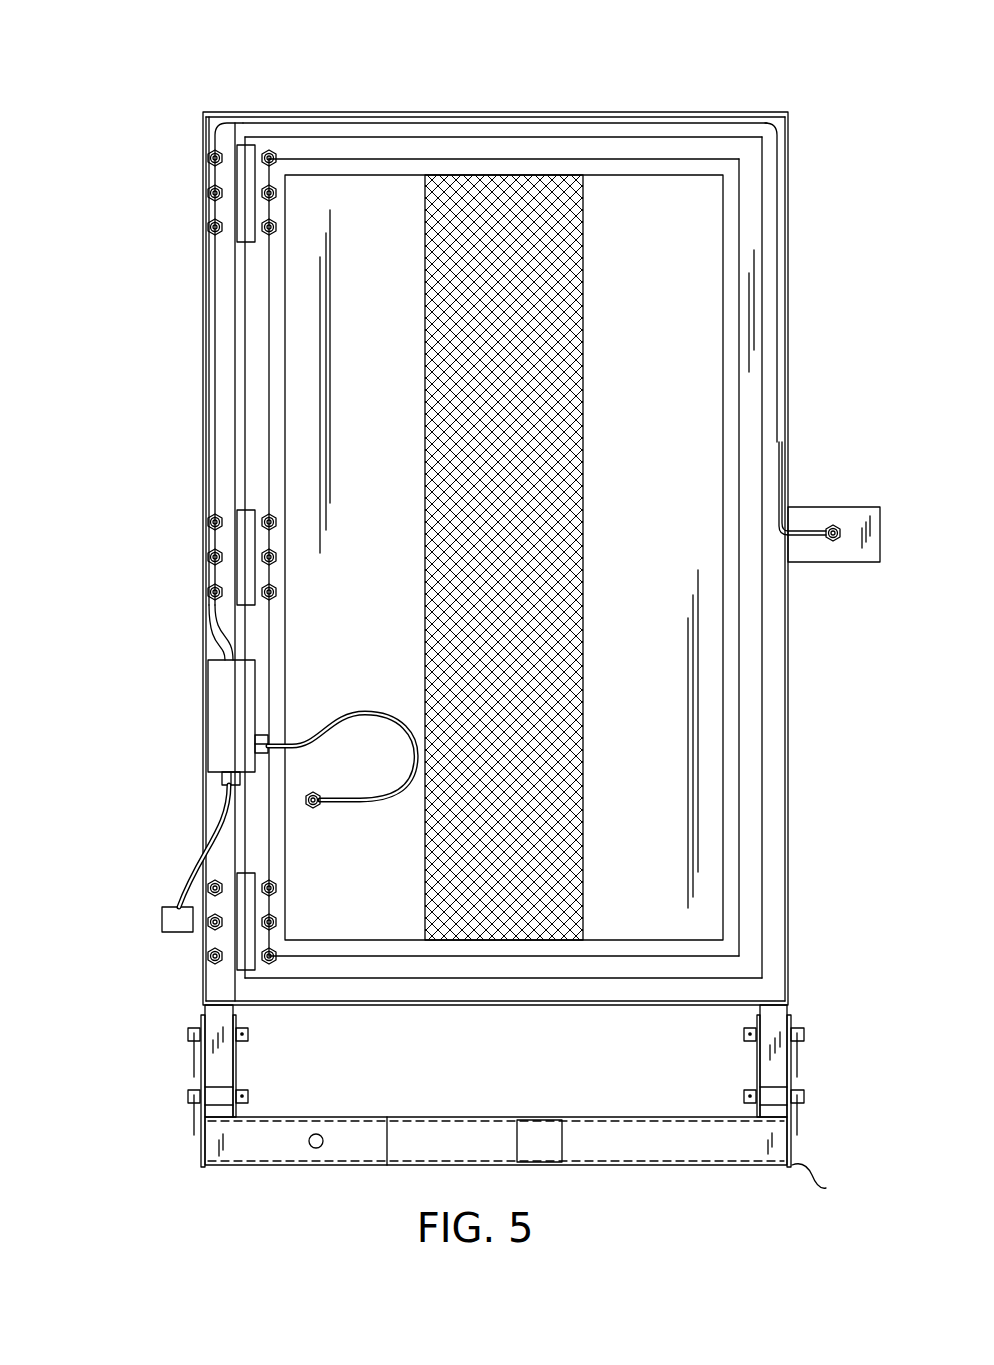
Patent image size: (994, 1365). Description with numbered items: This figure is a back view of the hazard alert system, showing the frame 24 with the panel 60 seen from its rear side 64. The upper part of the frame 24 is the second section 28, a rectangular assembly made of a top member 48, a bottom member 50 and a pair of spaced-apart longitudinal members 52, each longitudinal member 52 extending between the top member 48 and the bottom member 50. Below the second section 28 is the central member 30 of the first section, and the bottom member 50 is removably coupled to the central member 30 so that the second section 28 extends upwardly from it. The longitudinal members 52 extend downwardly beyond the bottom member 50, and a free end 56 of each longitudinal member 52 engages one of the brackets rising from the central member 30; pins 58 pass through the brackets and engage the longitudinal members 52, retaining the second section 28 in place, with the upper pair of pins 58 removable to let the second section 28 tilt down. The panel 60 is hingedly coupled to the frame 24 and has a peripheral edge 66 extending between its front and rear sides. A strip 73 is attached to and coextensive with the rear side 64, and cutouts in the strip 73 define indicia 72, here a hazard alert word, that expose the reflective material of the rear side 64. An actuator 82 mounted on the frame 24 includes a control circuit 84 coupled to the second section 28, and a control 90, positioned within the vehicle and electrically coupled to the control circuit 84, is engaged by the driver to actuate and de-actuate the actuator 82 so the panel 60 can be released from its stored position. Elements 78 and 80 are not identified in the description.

The frame 24 is at (479, 1119).
The second section 28 is at (182, 446).
The central member 30 is at (640, 1162).
The top member 48 is at (521, 112).
The bottom member 50 is at (683, 1006).
The longitudinal members 52 is at (203, 400).
The free end 56 is at (220, 1118).
The pins 58 is at (188, 1035).
The panel 60 is at (763, 386).
The rear side 64 is at (694, 703).
The peripheral edge 66 is at (762, 474).
The indicia 72 is at (487, 195).
The strips 73 is at (568, 215).
The left conduit 78 is at (377, 125).
The bottom frame member 80 is at (525, 1006).
The actuator 82 is at (216, 680).
The control circuit 84 is at (222, 750).
The control 90 is at (162, 919).